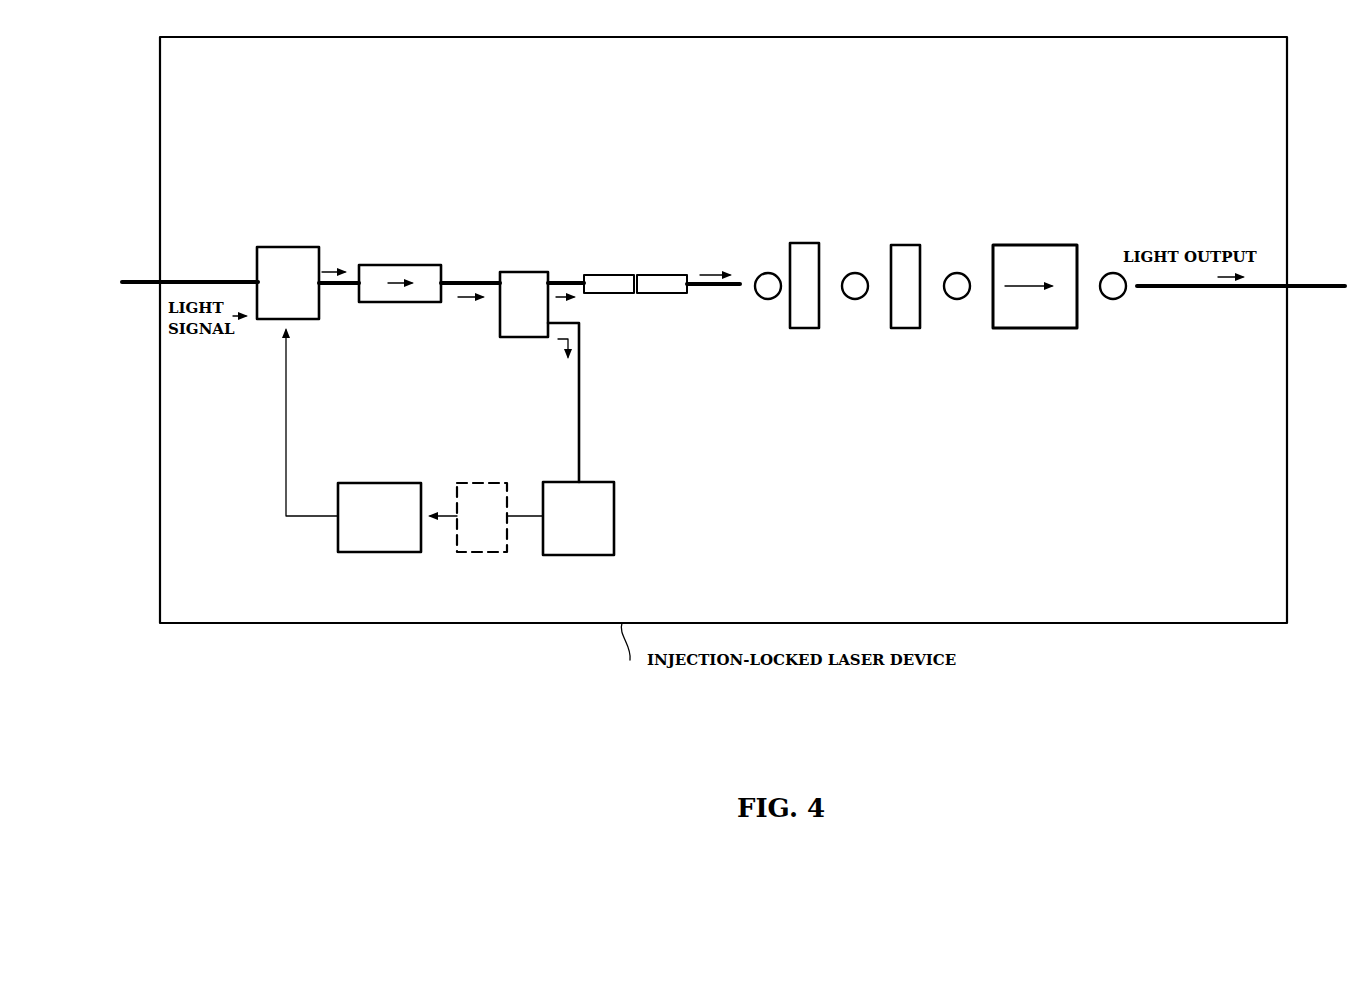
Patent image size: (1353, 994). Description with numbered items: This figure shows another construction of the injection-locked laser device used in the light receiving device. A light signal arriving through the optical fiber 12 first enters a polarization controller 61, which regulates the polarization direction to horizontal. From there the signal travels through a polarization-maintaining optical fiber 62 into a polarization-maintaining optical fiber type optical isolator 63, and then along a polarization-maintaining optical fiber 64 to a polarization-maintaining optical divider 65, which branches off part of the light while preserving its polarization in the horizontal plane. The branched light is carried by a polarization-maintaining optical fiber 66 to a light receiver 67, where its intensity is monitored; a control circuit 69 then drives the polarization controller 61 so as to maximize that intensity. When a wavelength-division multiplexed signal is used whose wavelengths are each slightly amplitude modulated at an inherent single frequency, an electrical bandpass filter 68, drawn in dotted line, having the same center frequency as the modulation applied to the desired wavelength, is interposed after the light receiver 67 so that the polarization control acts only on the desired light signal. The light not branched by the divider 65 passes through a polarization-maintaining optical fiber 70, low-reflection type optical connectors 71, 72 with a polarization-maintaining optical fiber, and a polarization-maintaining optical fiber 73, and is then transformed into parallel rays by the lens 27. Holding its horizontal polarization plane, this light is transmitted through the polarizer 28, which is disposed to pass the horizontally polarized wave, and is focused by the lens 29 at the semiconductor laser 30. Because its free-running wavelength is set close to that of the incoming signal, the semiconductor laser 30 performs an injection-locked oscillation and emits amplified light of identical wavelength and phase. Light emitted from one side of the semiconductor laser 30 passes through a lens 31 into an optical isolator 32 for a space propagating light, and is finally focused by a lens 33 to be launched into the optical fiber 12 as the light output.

The optical fiber 12 is at (221, 281).
The lens 27 is at (760, 299).
The polarizer 28 is at (802, 243).
The lens 29 is at (850, 299).
The semiconductor laser 30 is at (913, 245).
The lens 31 is at (952, 299).
The optical isolator for a space propagating light 32 is at (1015, 328).
The lens 33 is at (1107, 299).
The polarization controller 61 is at (267, 320).
The polarization-maintaining optical fiber 62 is at (341, 287).
The polarization-maintaining optical fiber type optical isolator 63 is at (382, 265).
The polarization-maintaining optical fiber 64 is at (466, 281).
The polarization-maintaining optical divider 65 is at (506, 337).
The polarization-maintaining optical fiber 66 is at (581, 420).
The light receiver 67 is at (614, 528).
The electrical bandpass filter 68 is at (495, 552).
The control circuit 69 is at (354, 552).
The polarization-maintaining optical fiber 70 is at (561, 279).
The low-reflection type optical connector 71 is at (622, 275).
The low-reflection type optical connector 72 is at (676, 275).
The polarization-maintaining optical fiber 73 is at (712, 288).